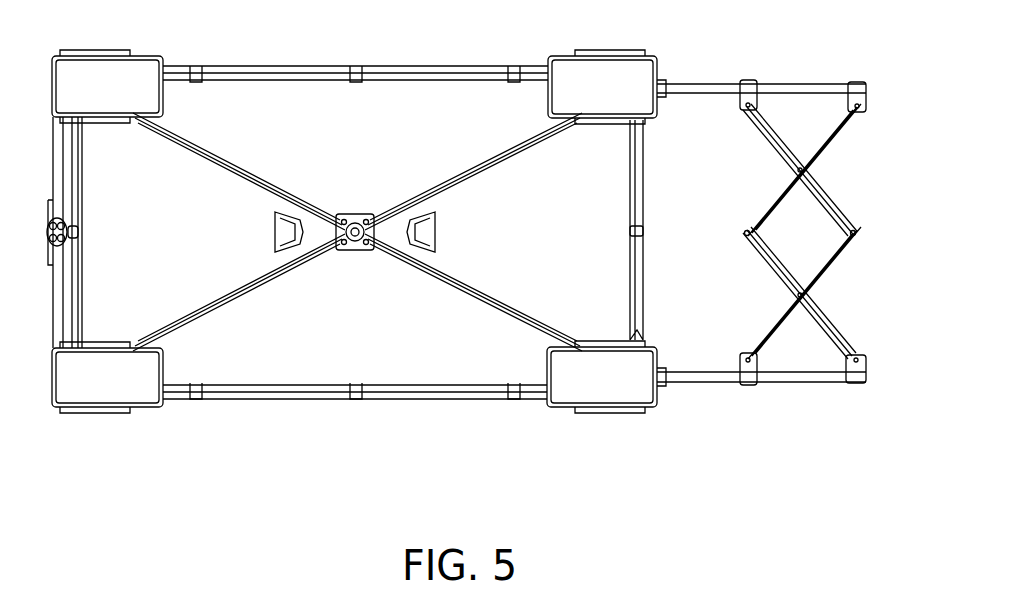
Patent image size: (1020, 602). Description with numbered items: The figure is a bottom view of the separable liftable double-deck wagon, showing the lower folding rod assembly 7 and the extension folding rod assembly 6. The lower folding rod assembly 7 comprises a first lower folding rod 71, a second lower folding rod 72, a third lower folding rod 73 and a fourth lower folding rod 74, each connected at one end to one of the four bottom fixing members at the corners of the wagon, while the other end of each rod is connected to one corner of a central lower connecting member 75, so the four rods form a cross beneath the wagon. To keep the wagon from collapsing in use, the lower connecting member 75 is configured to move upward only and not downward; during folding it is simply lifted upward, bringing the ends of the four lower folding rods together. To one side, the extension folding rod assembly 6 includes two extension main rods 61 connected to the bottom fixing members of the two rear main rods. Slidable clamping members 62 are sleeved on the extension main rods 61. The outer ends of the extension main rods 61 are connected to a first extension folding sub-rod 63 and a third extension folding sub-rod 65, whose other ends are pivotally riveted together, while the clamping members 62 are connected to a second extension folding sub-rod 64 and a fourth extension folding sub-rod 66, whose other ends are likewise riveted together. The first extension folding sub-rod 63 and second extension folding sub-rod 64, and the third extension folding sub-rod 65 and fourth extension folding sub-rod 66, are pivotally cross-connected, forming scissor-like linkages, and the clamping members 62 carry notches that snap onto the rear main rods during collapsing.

The extension folding rod assembly 6 is at (870, 232).
The extension main rod 61 is at (772, 90).
The clamping member 62 is at (748, 387).
The first extension folding sub-rod 63 is at (835, 133).
The second extension folding sub-rod 64 is at (762, 137).
The third extension folding sub-rod 65 is at (835, 332).
The fourth extension folding sub-rod 66 is at (763, 330).
The lower folding rod assembly 7 is at (350, 292).
The first lower folding rod 71 is at (268, 200).
The second lower folding rod 72 is at (443, 200).
The third lower folding rod 73 is at (266, 288).
The fourth lower folding rod 74 is at (443, 285).
The lower connecting member 75 is at (353, 218).